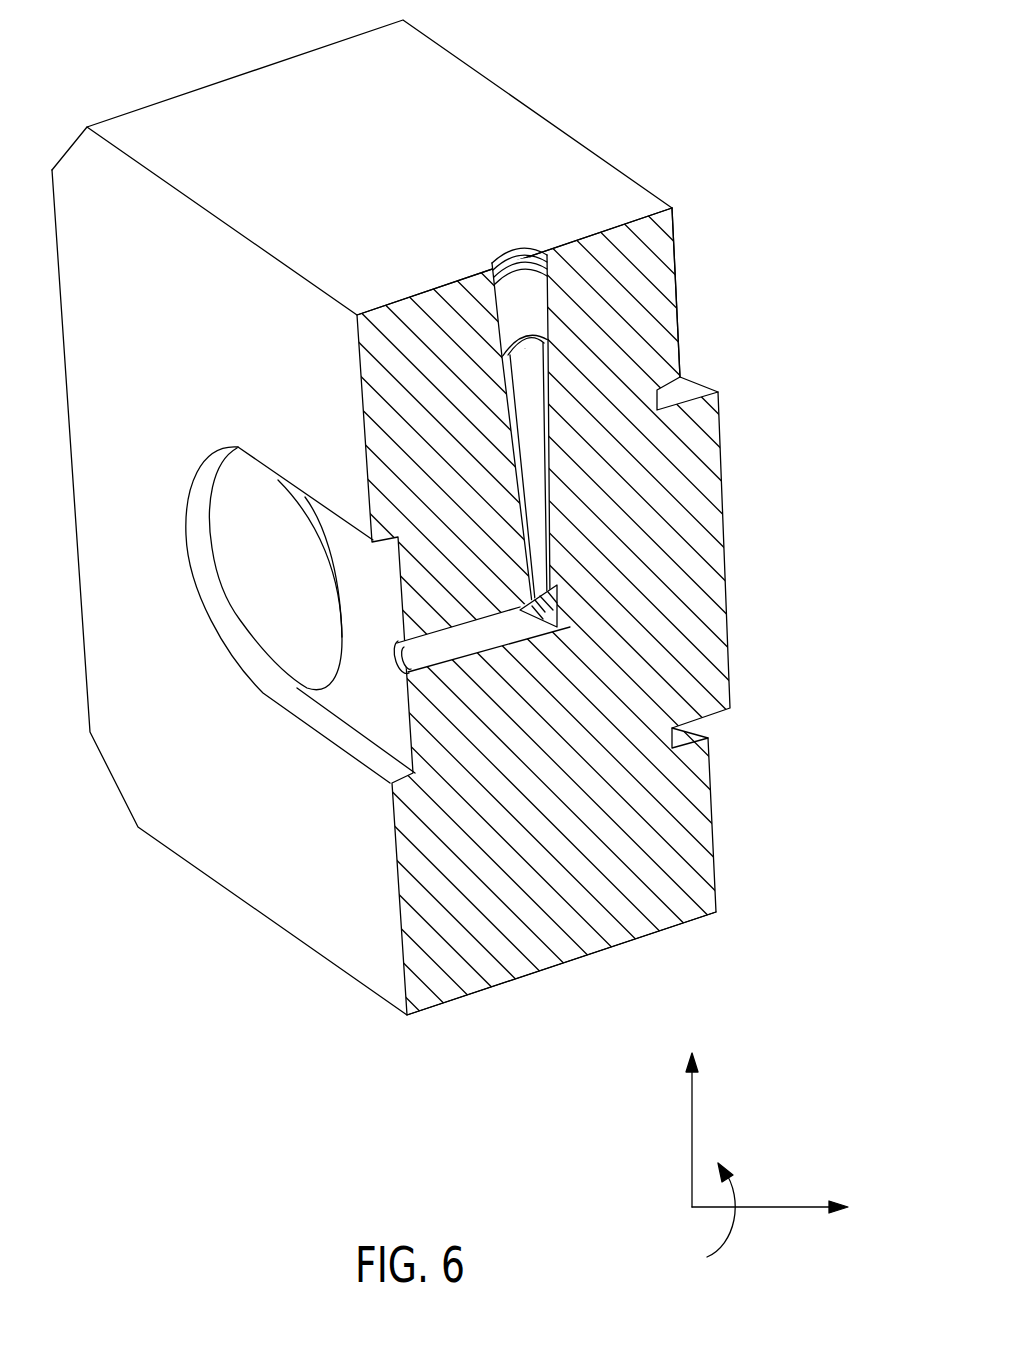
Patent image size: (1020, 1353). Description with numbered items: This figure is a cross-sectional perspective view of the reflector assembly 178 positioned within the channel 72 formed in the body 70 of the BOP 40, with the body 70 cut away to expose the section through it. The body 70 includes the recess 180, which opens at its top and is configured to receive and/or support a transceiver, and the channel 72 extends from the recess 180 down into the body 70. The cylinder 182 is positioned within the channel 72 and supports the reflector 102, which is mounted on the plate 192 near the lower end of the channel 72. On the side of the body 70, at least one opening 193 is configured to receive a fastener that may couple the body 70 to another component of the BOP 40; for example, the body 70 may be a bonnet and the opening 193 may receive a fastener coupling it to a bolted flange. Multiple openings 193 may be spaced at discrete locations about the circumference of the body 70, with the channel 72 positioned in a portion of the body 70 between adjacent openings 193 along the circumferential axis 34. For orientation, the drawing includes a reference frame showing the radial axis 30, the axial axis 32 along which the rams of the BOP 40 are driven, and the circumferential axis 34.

The BOP 40 is at (692, 77).
The body 70 is at (497, 127).
The reflector assembly 178 is at (700, 266).
The recess 180 is at (500, 262).
The cylinder 182 is at (546, 390).
The channel 72 is at (570, 496).
The reflector 102 is at (547, 600).
The plate 192 is at (540, 627).
The opening 193 is at (257, 573).
The radial axis 30 is at (691, 1136).
The axial axis 32 is at (763, 1207).
The circumferential axis 34 is at (733, 1222).